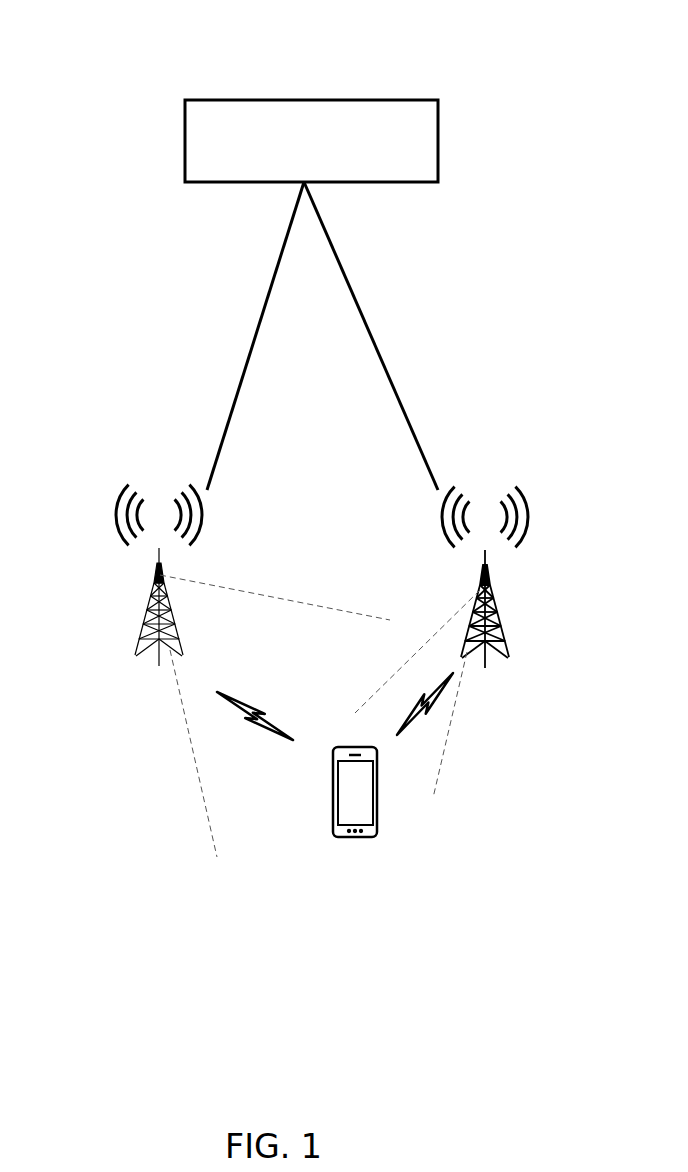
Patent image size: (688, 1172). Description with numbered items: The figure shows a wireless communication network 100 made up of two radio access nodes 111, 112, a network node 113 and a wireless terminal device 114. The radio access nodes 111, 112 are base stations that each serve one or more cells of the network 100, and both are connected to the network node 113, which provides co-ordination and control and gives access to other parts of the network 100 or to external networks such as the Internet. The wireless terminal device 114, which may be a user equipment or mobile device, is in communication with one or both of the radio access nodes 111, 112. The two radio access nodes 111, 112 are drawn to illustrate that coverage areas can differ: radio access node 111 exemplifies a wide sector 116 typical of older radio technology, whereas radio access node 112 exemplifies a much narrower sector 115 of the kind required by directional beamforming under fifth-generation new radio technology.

The network 100 is at (483, 70).
The network node 113 is at (185, 143).
The radio access node 111 is at (137, 580).
The radio access node 112 is at (505, 580).
The wireless terminal device 114 is at (323, 822).
The sector 115 is at (422, 738).
The wide sector 116 is at (245, 680).